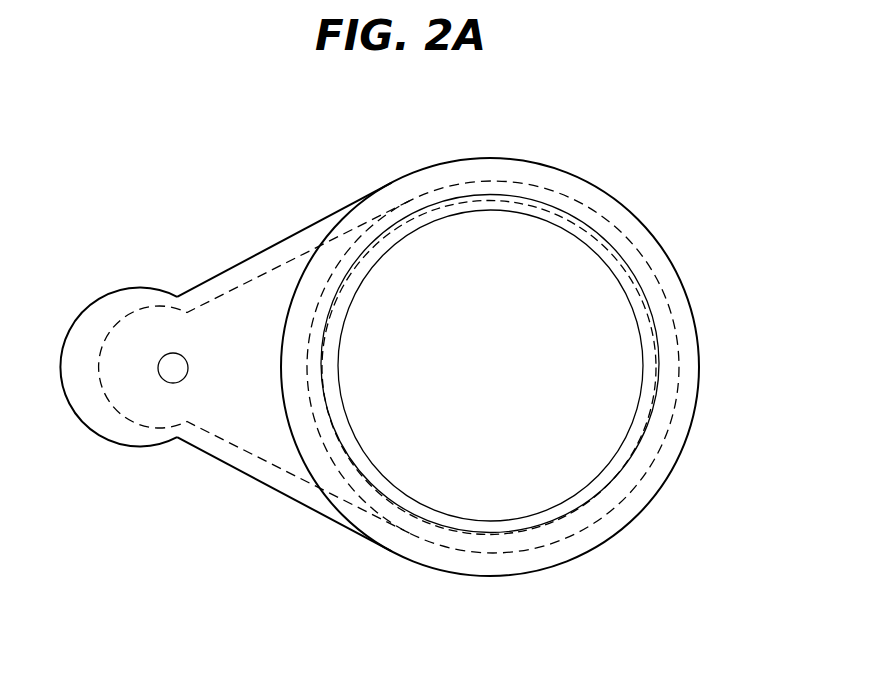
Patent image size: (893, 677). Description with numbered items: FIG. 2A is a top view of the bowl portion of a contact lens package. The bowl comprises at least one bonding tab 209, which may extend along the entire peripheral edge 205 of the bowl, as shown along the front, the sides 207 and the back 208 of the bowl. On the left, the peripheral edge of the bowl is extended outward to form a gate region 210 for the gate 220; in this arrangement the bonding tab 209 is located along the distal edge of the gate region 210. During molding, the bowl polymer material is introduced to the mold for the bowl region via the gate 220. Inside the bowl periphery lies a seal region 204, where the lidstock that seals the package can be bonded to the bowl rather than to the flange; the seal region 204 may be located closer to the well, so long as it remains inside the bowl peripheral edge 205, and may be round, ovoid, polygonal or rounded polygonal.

The seal region 204 is at (598, 515).
The peripheral edge 205 is at (337, 208).
The sides 207 is at (506, 157).
The back 208 is at (697, 407).
The bonding tab 209 is at (145, 390).
The gate region 210 is at (223, 407).
The gate 220 is at (168, 358).